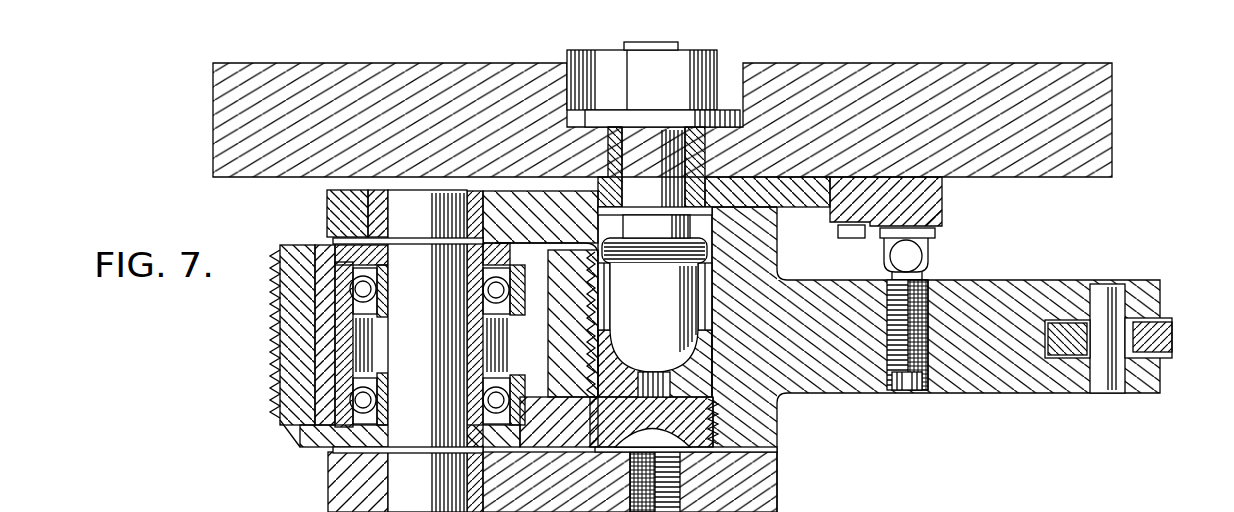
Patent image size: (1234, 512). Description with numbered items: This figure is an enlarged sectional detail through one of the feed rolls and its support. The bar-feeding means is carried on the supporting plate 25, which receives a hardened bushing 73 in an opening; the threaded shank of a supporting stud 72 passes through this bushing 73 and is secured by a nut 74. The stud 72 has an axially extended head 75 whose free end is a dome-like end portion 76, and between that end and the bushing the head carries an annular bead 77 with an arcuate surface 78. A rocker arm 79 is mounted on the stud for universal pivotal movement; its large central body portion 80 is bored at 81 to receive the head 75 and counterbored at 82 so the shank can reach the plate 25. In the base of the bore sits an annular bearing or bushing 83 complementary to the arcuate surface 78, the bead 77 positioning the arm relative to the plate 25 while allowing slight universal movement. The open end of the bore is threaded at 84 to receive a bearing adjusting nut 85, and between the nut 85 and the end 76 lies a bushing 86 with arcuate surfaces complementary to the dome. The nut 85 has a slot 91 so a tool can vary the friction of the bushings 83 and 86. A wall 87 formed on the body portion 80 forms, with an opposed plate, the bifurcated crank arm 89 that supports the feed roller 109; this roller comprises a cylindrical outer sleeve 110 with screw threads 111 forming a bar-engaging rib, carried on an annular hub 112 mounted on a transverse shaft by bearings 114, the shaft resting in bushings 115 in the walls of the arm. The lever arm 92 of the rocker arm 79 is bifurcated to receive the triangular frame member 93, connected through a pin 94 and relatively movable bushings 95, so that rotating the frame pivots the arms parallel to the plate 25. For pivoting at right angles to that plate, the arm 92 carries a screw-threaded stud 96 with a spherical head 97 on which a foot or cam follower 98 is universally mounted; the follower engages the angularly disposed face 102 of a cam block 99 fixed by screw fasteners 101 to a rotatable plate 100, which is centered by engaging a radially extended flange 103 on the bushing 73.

The plate 25 is at (276, 68).
The supporting stud 72 is at (664, 40).
The hardened bushing 73 is at (605, 166).
The nut 74 is at (718, 52).
The head 75 is at (655, 302).
The dome-like end portion 76 is at (700, 362).
The annular bead 77 is at (712, 270).
The arcuate surface 78 is at (656, 227).
The rocker arm 79 is at (849, 393).
The central body portion 80 is at (762, 403).
The bore 81 is at (712, 312).
The counterbore 82 is at (705, 214).
The annular bearing or bushing 83 is at (546, 325).
The threads 84 is at (715, 440).
The bearing adjusting nut 85 is at (720, 458).
The bearing or bushing 86 is at (712, 383).
The wall 87 is at (521, 191).
The bifurcated crank arm 89 is at (327, 207).
The slot 91 is at (652, 437).
The lever arm 92 is at (1022, 380).
The triangular frame member 93 is at (1173, 334).
The pin 94 is at (1112, 393).
The relatively movable bushing 95 is at (1152, 352).
The screw-threaded stud 96 is at (920, 392).
The spherical head 97 is at (927, 258).
The foot or cam follower 98 is at (935, 236).
The cam block 99 is at (935, 195).
The rotatable plate 100 is at (806, 188).
The screw fastener 101 is at (845, 240).
The angularly disposed face 102 is at (932, 227).
The radially extended flange 103 is at (706, 190).
The feed roller 109 is at (285, 433).
The cylindrical outer sleeve 110 is at (278, 392).
The screw threads 111 is at (274, 302).
The annular hub 112 is at (306, 460).
The bearing 114 is at (398, 308).
The bushing 115 is at (478, 191).